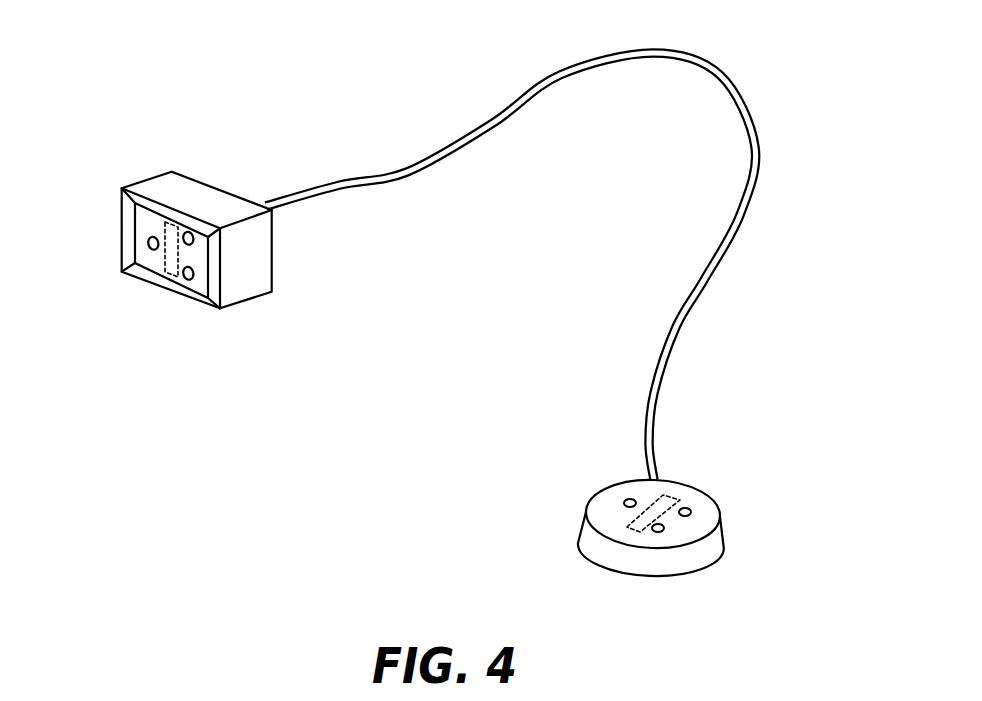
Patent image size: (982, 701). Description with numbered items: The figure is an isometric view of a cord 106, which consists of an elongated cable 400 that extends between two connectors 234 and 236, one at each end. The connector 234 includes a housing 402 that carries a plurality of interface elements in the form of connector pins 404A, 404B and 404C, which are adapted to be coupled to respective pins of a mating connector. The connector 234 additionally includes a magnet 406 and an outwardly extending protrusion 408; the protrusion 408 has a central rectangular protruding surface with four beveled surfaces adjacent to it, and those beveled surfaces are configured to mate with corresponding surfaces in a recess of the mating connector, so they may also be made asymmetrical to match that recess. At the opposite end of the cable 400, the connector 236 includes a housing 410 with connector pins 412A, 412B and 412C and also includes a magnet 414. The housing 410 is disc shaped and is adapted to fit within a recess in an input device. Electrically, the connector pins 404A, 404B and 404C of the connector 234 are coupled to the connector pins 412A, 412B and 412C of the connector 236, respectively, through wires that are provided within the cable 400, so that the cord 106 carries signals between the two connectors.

The cord 106 is at (425, 123).
The elongated cable 400 is at (412, 180).
The connector 234 is at (168, 293).
The housing 402 is at (150, 178).
The outwardly extending protrusion 408 is at (137, 219).
The magnet 406 is at (172, 222).
The connector pin 404A is at (148, 242).
The connector pin 404B is at (194, 242).
The connector pin 404C is at (194, 277).
The connector 236 is at (697, 482).
The housing 410 is at (648, 578).
The magnet 414 is at (627, 527).
The connector pin 412A is at (624, 502).
The connector pin 412B is at (692, 513).
The connector pin 412C is at (662, 533).